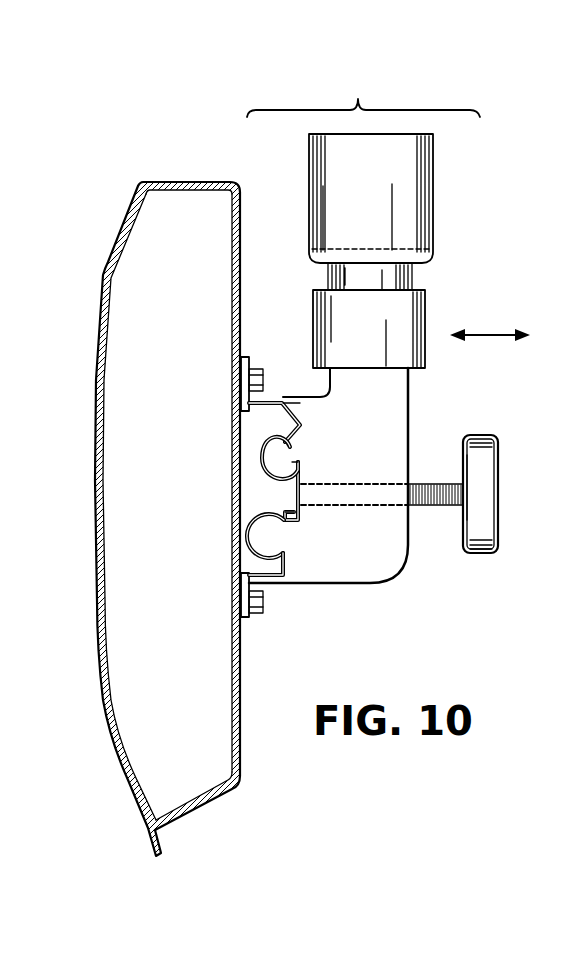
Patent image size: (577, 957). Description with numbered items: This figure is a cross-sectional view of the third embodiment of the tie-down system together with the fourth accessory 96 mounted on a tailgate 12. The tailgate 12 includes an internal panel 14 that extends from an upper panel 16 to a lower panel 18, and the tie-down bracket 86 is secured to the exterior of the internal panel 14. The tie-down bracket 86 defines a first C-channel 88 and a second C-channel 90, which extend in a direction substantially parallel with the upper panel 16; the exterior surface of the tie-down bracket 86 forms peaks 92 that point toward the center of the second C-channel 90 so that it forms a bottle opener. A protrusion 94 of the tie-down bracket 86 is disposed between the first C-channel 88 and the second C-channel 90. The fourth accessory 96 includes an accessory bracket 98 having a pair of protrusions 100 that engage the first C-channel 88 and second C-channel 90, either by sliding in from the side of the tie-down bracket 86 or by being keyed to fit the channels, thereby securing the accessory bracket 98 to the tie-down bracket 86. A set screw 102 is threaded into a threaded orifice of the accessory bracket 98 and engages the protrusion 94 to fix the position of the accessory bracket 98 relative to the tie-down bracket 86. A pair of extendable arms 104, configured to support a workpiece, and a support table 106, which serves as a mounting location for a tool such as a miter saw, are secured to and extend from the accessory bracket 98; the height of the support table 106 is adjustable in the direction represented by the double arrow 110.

The tailgate 12 is at (100, 261).
The internal panel 14 is at (240, 232).
The upper panel 16 is at (186, 180).
The lower panel 18 is at (200, 806).
The tie-down bracket 86 is at (286, 395).
The first C-channel 88 is at (303, 452).
The second C-channel 90 is at (263, 552).
The peaks 92 is at (290, 532).
The protrusion 94 is at (305, 492).
The fourth accessory 96 is at (373, 219).
The accessory bracket 98 is at (400, 580).
The pair of protrusions 100 is at (263, 457).
The set screw 102 is at (436, 484).
The pair of extendable arms 104 is at (433, 212).
The support table 106 is at (426, 312).
The double arrow 110 is at (492, 333).